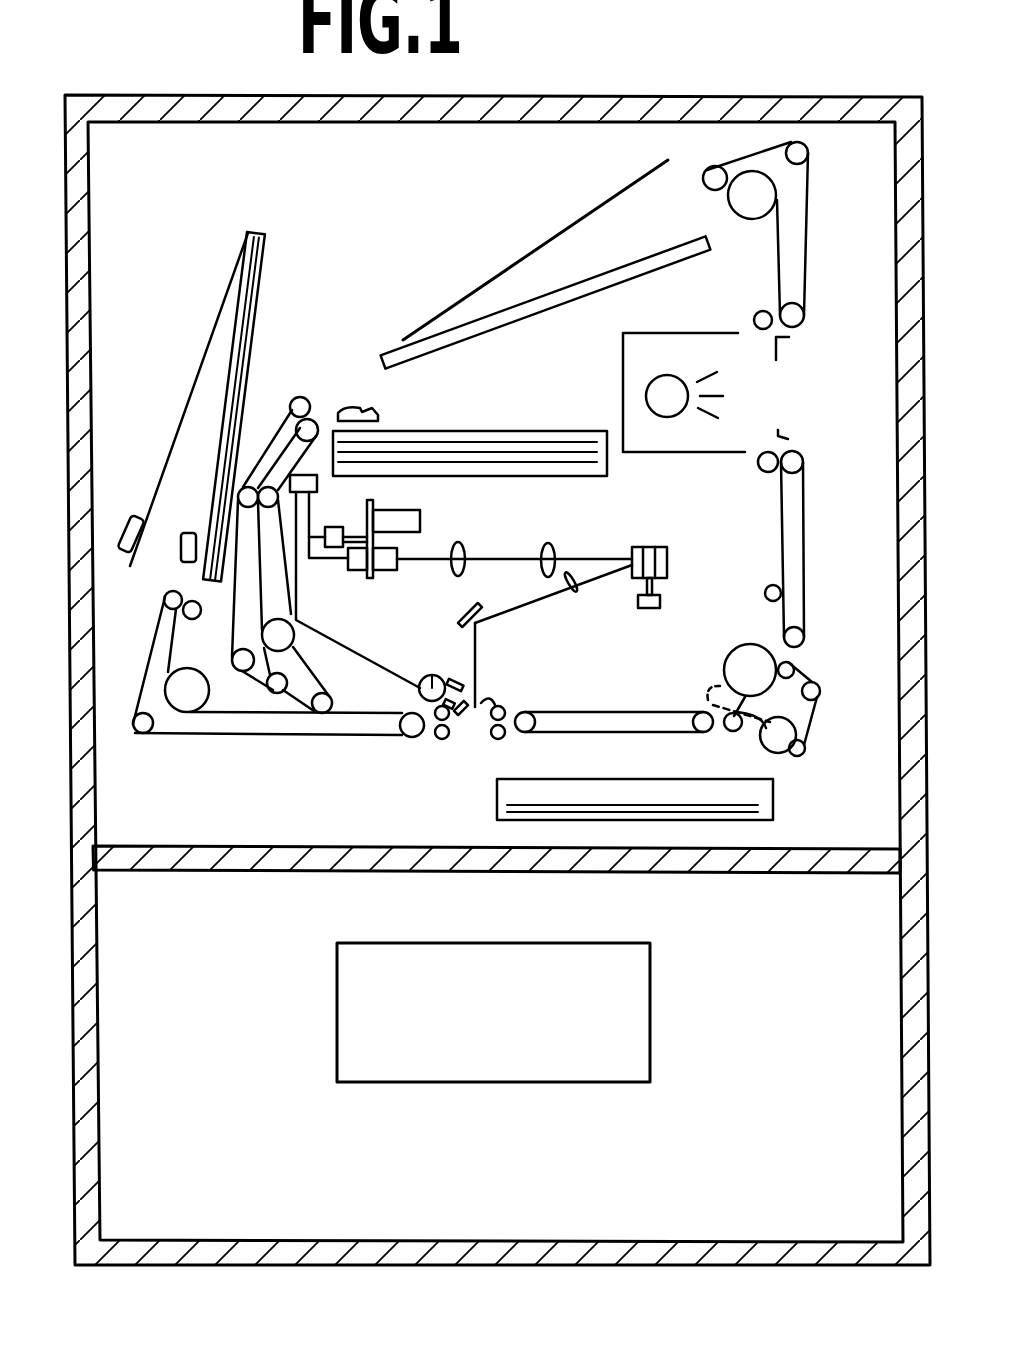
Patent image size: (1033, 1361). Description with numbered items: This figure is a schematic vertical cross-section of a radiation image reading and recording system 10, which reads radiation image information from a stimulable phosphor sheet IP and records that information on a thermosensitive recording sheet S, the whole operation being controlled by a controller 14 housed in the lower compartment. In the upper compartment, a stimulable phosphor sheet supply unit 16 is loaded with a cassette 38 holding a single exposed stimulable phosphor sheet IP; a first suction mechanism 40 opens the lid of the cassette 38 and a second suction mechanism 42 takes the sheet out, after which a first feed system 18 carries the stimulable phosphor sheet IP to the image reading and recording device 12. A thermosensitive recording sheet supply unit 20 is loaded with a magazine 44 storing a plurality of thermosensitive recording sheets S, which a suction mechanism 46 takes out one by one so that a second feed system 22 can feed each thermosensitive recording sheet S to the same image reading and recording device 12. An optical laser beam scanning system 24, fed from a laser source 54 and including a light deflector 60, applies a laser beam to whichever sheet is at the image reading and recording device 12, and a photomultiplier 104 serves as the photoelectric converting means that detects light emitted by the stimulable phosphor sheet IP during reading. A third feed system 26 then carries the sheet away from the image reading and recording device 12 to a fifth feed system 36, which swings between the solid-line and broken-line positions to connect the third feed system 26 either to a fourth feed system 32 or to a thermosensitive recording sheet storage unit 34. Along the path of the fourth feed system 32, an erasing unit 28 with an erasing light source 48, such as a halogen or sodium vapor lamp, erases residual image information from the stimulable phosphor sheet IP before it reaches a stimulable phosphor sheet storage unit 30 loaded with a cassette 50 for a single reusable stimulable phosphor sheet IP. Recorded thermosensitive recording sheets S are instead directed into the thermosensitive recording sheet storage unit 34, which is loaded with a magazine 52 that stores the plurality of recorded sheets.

The radiation image reading and recording system 10 is at (855, 78).
The image reading and recording device 12 is at (425, 718).
The controller 14 is at (338, 1043).
The stimulable phosphor sheet supply unit 16 is at (229, 371).
The stimulable phosphor sheet IP is at (255, 272).
The first feed system 18 is at (205, 736).
The thermosensitive recording sheet supply unit 20 is at (470, 433).
The second feed system 22 is at (280, 400).
The optical laser beam scanning system 24 is at (575, 546).
The third feed system 26 is at (606, 718).
The erasing unit 28 is at (684, 393).
The stimulable phosphor sheet storage unit 30 is at (525, 232).
The fourth feed system 32 is at (796, 258).
The thermosensitive recording sheet storage unit 34 is at (678, 858).
The fifth feed system 36 is at (815, 705).
The cassette 38 is at (233, 343).
The first suction mechanism 40 is at (138, 516).
The second suction mechanism 42 is at (187, 532).
The magazine 44 is at (470, 445).
The suction mechanism 46 is at (378, 409).
The erasing light source 48 is at (673, 408).
The cassette 50 is at (455, 337).
The magazine 52 is at (678, 858).
The laser source 54 is at (353, 575).
The light deflector 60 is at (667, 563).
The photomultiplier 104 is at (430, 675).
The thermosensitive recording sheet S is at (566, 442).